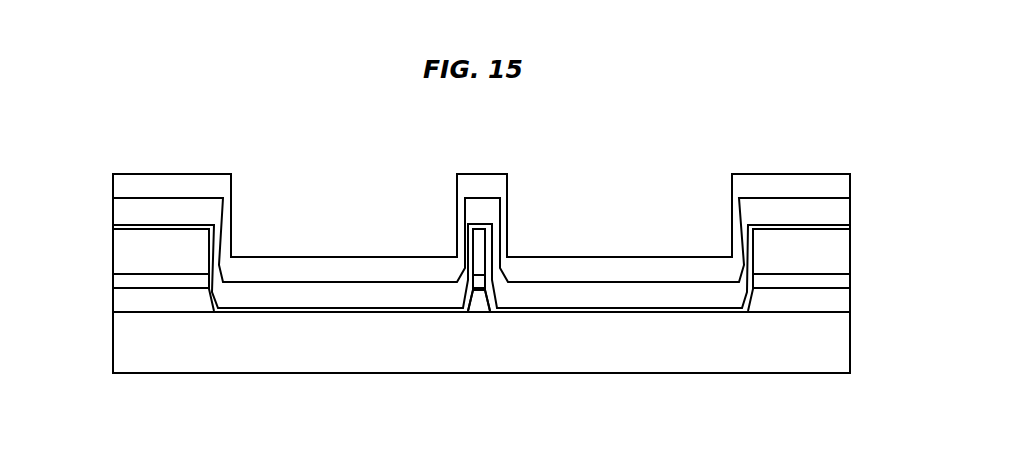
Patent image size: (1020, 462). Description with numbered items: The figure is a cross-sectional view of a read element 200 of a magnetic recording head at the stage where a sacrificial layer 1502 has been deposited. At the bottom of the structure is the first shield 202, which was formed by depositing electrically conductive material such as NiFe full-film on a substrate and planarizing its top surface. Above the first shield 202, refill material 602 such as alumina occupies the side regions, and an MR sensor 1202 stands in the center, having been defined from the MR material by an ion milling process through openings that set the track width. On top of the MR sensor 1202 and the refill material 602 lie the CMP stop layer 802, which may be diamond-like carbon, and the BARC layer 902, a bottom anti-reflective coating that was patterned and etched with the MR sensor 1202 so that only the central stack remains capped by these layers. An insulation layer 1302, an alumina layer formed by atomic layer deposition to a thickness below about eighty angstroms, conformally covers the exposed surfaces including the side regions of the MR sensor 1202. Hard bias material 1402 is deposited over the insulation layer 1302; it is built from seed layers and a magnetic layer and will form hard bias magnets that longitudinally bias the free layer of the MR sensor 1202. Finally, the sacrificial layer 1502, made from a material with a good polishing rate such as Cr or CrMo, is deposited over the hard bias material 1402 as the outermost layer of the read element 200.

The read element 200 is at (231, 106).
The first shield 202 is at (498, 362).
The refill material 602 is at (117, 300).
The CMP stop layer 802 is at (117, 282).
The BARC layer 902 is at (117, 248).
The MR sensor 1202 is at (478, 308).
The insulation layer 1302 is at (682, 307).
The hard bias material 1402 is at (592, 285).
The sacrificial layer 1502 is at (383, 263).